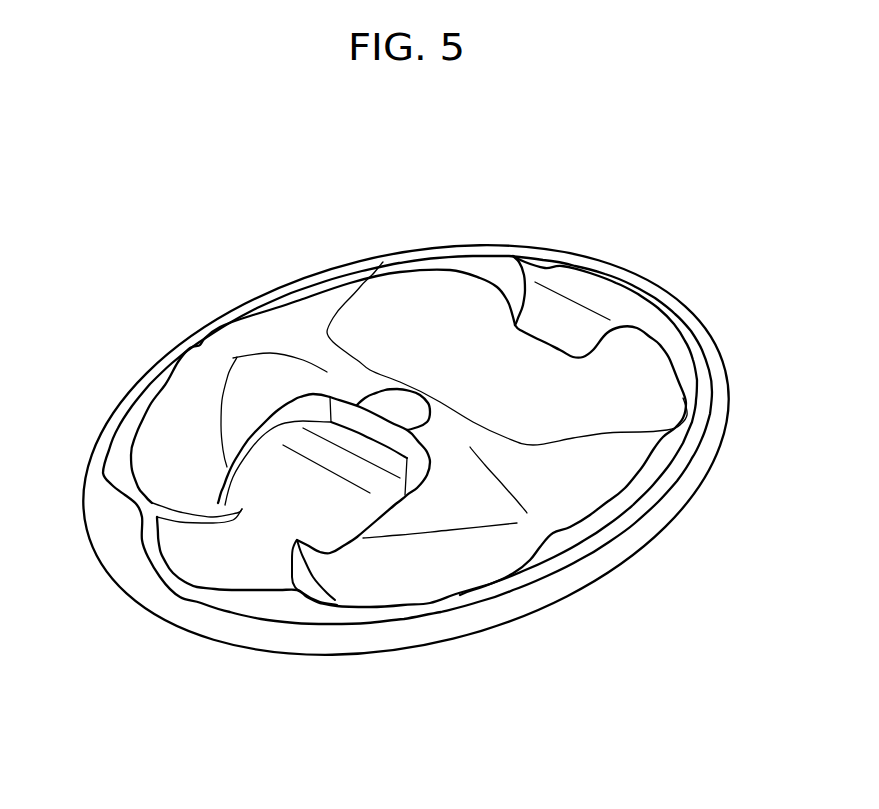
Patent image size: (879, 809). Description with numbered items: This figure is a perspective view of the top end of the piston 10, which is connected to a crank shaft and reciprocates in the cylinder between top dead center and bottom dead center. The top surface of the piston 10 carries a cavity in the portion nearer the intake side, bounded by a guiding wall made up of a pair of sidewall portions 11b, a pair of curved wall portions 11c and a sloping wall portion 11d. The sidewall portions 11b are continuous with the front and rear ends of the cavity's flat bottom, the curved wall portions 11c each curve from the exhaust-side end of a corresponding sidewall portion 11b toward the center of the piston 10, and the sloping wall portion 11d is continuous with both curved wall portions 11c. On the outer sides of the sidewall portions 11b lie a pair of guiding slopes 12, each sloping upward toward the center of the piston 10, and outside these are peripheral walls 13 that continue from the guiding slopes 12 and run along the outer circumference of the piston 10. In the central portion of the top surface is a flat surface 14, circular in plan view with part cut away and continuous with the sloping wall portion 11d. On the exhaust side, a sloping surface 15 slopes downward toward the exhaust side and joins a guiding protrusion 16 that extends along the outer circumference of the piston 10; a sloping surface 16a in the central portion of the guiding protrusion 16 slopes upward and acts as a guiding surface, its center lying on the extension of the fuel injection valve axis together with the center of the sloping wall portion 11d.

The piston 10 is at (348, 195).
The sidewall portions 11b is at (277, 427).
The curved wall portions 11c is at (302, 407).
The sloping wall portion 11d is at (347, 413).
The guiding slopes 12 is at (183, 423).
The peripheral walls 13 is at (183, 348).
The flat surface 14 is at (400, 407).
The sloping surface 15 is at (417, 313).
The guiding protrusion 16 is at (590, 303).
The sloping surface (guiding surface) 16a is at (560, 318).